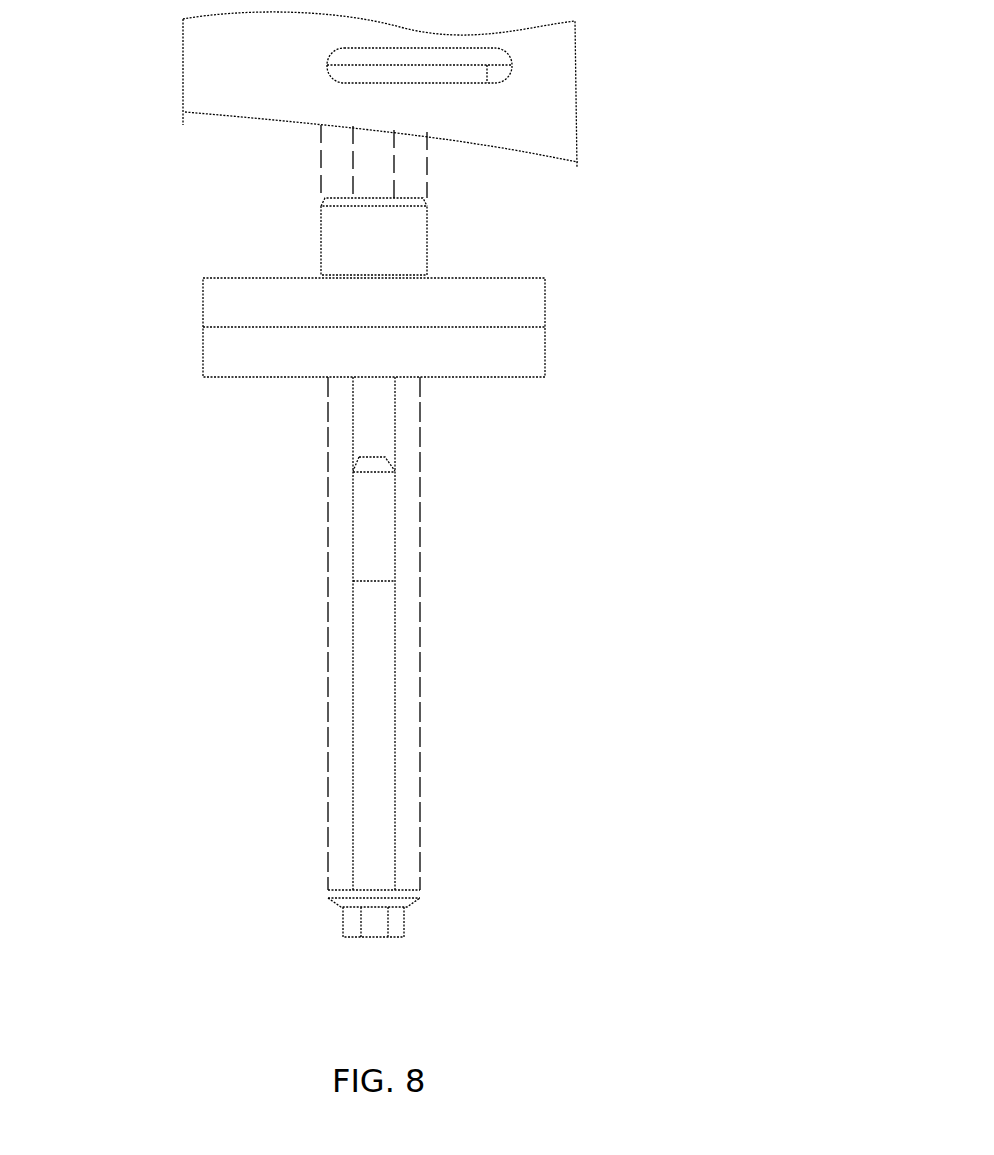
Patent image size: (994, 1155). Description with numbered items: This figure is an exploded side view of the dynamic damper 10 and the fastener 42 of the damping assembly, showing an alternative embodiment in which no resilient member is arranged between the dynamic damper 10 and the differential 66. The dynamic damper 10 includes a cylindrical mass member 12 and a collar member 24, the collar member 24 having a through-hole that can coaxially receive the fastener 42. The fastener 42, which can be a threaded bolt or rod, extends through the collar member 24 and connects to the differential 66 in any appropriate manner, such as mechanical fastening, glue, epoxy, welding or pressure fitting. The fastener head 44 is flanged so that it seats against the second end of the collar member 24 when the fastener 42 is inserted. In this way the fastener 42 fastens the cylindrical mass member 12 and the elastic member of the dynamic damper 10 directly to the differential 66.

The dynamic damper 10 is at (165, 282).
The cylindrical mass member 12 is at (527, 315).
The collar member 24 is at (395, 252).
The fastener 42 is at (373, 663).
The fastener head 44 is at (395, 927).
The differential 66 is at (558, 63).